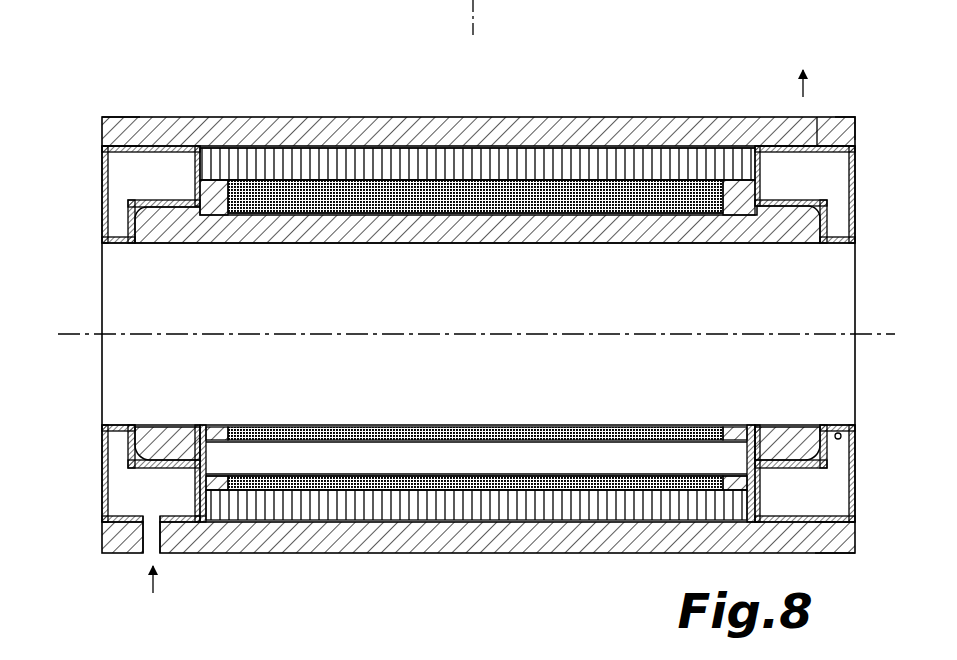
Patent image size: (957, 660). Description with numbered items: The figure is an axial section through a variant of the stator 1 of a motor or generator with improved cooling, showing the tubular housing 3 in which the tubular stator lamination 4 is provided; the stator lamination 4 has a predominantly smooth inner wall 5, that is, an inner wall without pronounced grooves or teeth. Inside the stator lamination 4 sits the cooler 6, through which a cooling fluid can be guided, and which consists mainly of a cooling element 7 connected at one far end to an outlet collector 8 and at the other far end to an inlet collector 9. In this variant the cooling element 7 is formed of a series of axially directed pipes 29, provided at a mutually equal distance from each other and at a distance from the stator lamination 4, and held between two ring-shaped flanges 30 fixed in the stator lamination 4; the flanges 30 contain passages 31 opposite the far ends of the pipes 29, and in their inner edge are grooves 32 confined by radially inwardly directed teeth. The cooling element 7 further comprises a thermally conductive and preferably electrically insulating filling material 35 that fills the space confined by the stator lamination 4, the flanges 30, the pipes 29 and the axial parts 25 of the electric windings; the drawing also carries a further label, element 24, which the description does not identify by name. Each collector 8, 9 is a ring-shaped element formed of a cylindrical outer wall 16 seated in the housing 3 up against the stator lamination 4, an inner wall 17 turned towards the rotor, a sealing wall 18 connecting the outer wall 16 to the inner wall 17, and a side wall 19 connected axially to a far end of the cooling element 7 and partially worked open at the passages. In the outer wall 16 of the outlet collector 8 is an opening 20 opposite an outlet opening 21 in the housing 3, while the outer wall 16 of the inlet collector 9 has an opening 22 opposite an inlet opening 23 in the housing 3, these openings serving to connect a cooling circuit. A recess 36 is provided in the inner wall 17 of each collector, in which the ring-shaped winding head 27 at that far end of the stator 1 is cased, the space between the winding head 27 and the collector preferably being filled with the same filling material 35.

The stator 1 is at (608, 70).
The tubular housing 3 is at (178, 117).
The stator lamination 4 is at (283, 148).
The inner wall 5 is at (375, 188).
The cooler 6 is at (826, 106).
The cooling element 7 is at (323, 480).
The outlet collector 8 is at (773, 160).
The inlet collector 9 is at (183, 152).
The cylindrical outer wall 16 is at (143, 146).
The corrugated inner wall 17 is at (128, 243).
The sealing wall 18 is at (102, 192).
The side wall 19 is at (236, 155).
The opening 20 is at (800, 147).
The outlet opening 21 is at (817, 146).
The opening 22 is at (196, 520).
The inlet opening 23 is at (160, 555).
The insulating mat 24 is at (442, 193).
The axial parts of the windings 25 is at (517, 233).
The winding head 27 is at (318, 165).
The axially directed pipes 29 is at (447, 573).
The ring-shaped flanges 30 is at (212, 185).
The passages 31 is at (402, 462).
The grooves 32 is at (655, 197).
The filling material 35 is at (533, 490).
The recess 36 is at (158, 245).